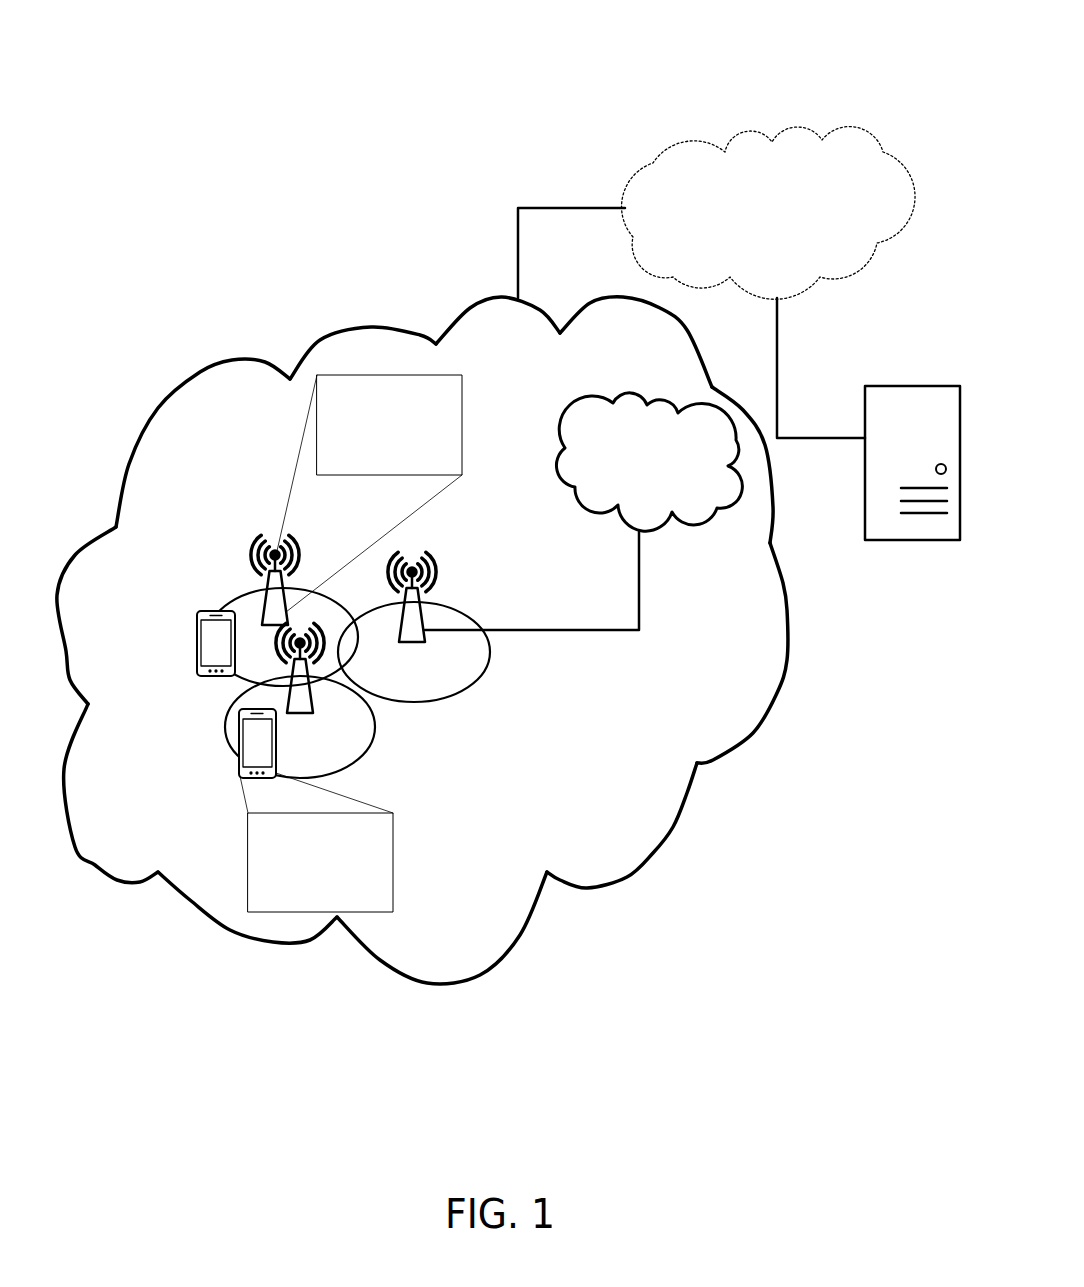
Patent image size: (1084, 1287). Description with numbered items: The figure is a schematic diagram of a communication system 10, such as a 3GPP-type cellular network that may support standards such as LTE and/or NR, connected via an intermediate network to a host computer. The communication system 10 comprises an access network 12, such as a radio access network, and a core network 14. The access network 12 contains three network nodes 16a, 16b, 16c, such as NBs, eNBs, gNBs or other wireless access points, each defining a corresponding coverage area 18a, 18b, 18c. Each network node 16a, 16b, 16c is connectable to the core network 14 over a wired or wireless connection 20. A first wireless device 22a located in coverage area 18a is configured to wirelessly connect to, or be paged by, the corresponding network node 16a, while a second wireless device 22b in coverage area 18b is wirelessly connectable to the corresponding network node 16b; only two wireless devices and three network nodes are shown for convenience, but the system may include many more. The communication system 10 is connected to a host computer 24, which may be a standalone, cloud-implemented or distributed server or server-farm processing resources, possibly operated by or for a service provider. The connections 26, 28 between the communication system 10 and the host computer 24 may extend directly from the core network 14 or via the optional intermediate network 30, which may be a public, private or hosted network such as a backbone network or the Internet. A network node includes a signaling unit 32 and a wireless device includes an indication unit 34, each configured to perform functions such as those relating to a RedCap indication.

The communication system 10 is at (234, 57).
The access network 12 is at (502, 336).
The core network 14 is at (706, 469).
The network node 16a is at (253, 553).
The network node 16b is at (310, 707).
The network node 16c is at (440, 573).
The coverage area 18a is at (218, 605).
The coverage area 18b is at (375, 727).
The coverage area 18c is at (492, 652).
The connection 20 is at (640, 583).
The wireless device 22a is at (200, 677).
The wireless device 22b is at (240, 778).
The host computer 24 is at (937, 436).
The connection 26 is at (533, 208).
The connection 28 is at (820, 440).
The intermediate network 30 is at (800, 216).
The signaling unit 32 is at (369, 493).
The indication unit 34 is at (316, 842).